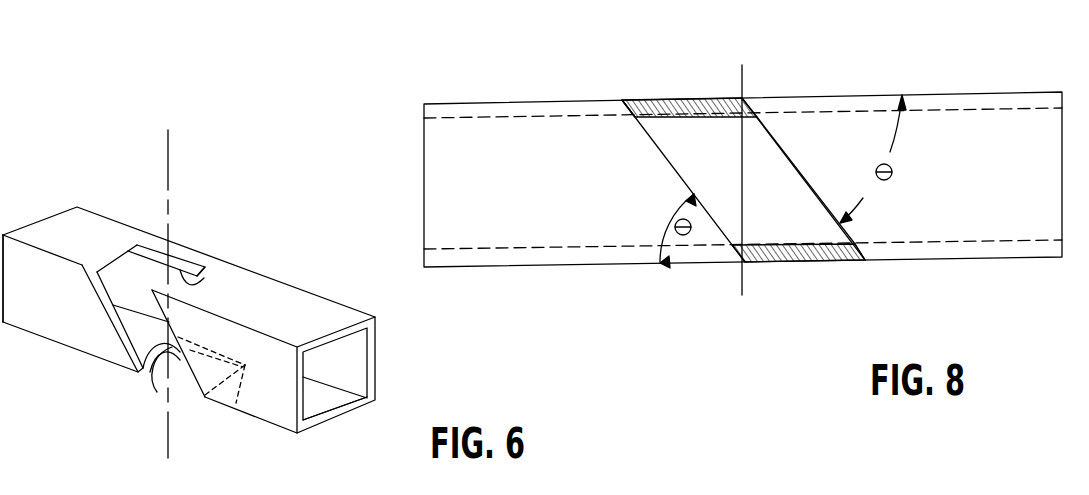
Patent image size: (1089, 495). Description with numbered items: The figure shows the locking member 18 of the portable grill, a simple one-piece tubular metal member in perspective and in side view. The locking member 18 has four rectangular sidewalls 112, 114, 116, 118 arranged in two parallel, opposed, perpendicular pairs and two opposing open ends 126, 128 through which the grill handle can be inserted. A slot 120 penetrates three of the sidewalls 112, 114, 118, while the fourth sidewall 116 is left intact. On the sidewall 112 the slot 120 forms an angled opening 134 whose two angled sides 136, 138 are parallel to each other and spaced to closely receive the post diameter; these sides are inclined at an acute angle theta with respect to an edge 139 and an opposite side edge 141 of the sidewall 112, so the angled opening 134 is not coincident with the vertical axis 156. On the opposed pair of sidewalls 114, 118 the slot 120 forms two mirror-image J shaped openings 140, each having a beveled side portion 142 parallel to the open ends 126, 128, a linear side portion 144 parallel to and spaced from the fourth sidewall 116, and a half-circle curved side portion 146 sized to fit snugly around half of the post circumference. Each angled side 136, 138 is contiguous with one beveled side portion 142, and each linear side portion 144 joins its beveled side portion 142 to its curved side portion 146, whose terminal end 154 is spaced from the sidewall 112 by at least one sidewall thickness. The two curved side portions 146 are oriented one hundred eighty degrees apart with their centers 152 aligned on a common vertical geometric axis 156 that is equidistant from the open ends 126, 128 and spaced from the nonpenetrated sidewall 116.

In FIG. 6, the locking member 18 is at (252, 203).
In FIG. 8, the locking member 18 is at (787, 72).
In FIG. 6, the sidewall 112 is at (50, 290).
In FIG. 8, the sidewall 112 is at (515, 226).
In FIG. 6, the sidewall 114 is at (90, 245).
In FIG. 6, the fourth sidewall 116 is at (360, 375).
In FIG. 8, the fourth sidewall 116 is at (722, 155).
In FIG. 6, the sidewall 118 is at (327, 403).
In FIG. 6, the slot 120 is at (172, 262).
In FIG. 6, the open end 126 is at (15, 253).
In FIG. 6, the open end 128 is at (375, 372).
In FIG. 6, the angled opening 134 is at (112, 320).
In FIG. 8, the angled opening 134 is at (683, 181).
In FIG. 6, the angled side 136 is at (99, 298).
In FIG. 8, the angled side 136 is at (668, 163).
In FIG. 6, the angled side 138 is at (169, 324).
In FIG. 8, the angled side 138 is at (802, 175).
In FIG. 8, the edge of sidewall 139 is at (866, 95).
In FIG. 6, the J shaped opening 140 is at (205, 285).
In FIG. 8, the opposite side edge 141 is at (578, 268).
In FIG. 6, the beveled side portion 142 is at (113, 250).
In FIG. 8, the beveled side portion 142 is at (622, 100).
In FIG. 6, the linear side portion 144 is at (185, 270).
In FIG. 8, the linear side portion 144 is at (689, 100).
In FIG. 6, the curved side portion 146 is at (200, 282).
In FIG. 6, the center 152 is at (201, 271).
In FIG. 6, the terminal end 154 is at (168, 291).
In FIG. 6, the vertical geometric axis 156 is at (168, 138).
In FIG. 8, the vertical geometric axis 156 is at (742, 65).